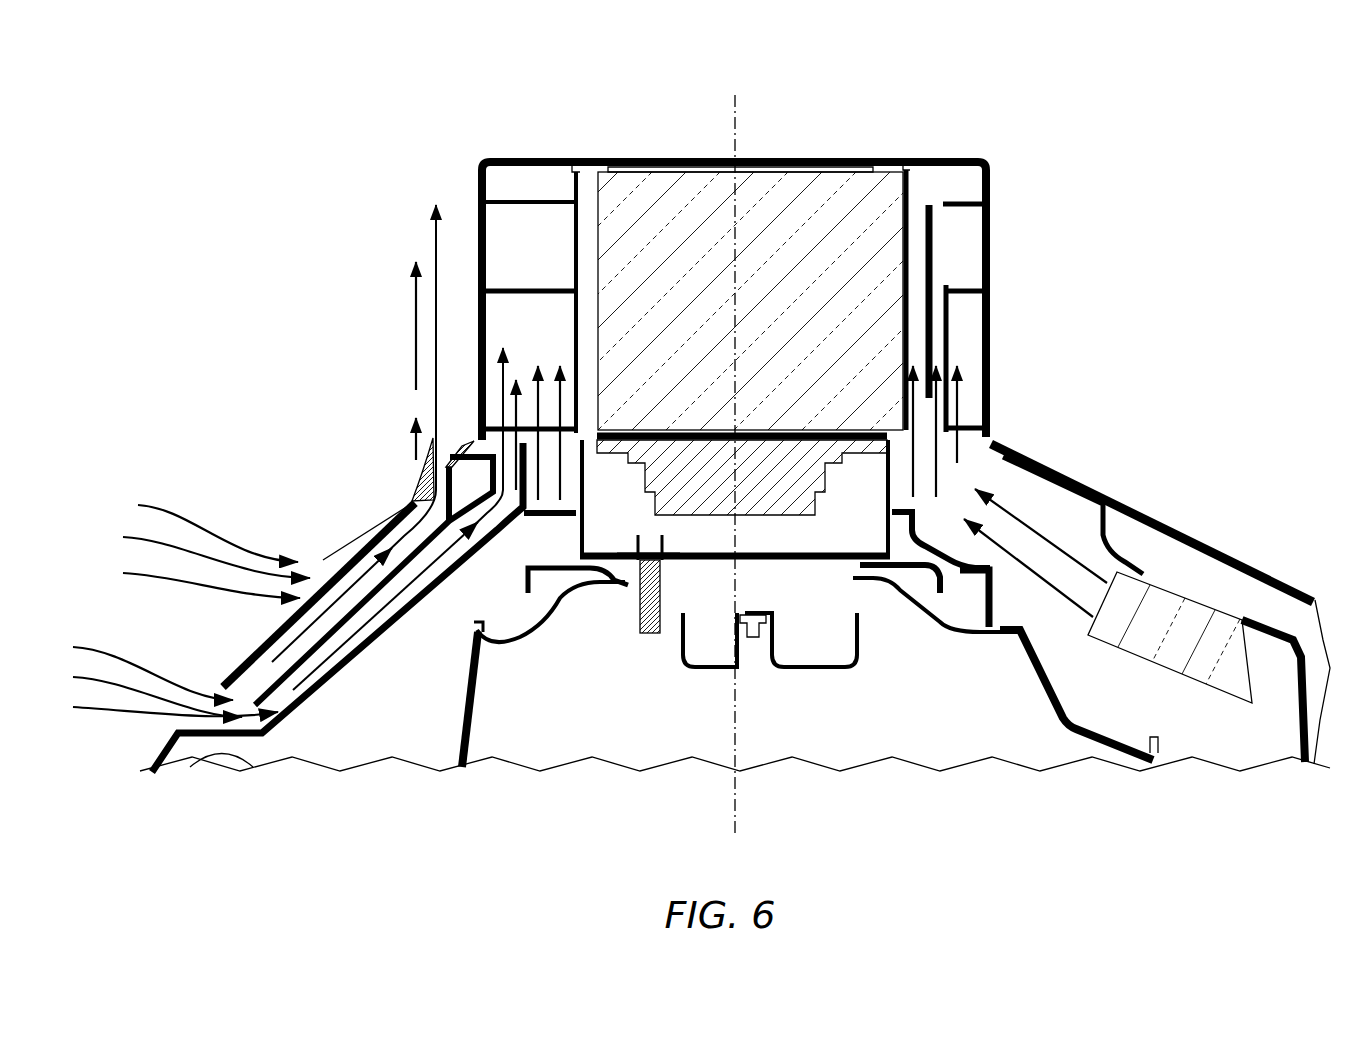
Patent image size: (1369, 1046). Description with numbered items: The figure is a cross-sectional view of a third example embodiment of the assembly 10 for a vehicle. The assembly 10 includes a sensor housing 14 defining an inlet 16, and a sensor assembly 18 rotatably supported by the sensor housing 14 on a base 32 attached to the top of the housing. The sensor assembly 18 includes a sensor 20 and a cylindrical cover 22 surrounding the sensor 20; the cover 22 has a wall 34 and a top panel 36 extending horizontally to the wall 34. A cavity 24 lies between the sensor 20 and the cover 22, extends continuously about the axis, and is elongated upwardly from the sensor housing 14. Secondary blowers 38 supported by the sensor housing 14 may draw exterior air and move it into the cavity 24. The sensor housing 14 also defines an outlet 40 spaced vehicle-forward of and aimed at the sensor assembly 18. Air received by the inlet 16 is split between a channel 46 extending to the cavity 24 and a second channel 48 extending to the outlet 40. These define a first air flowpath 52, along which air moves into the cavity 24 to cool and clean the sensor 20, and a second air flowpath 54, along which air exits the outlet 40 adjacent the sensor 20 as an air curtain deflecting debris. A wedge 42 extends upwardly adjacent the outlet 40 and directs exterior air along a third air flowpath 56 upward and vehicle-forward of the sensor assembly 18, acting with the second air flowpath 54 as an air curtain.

The assembly 10 is at (1142, 164).
The sensor housing 14 is at (357, 545).
The inlet 16 is at (222, 692).
The sensor assembly 18 is at (586, 122).
The sensor 20 is at (883, 253).
The cover 22 is at (990, 158).
The cavity 24 is at (510, 330).
The base 32 is at (595, 532).
The wall 34 is at (992, 324).
The top panel 36 is at (838, 160).
The secondary blowers 38 is at (1160, 610).
The outlet 40 is at (448, 462).
The wedge 42 is at (423, 465).
The channel 46 is at (283, 690).
The second channel 48 is at (248, 672).
The first air flowpath 52 is at (360, 632).
The second air flowpath 54 is at (278, 645).
The third air flowpath 56 is at (367, 500).